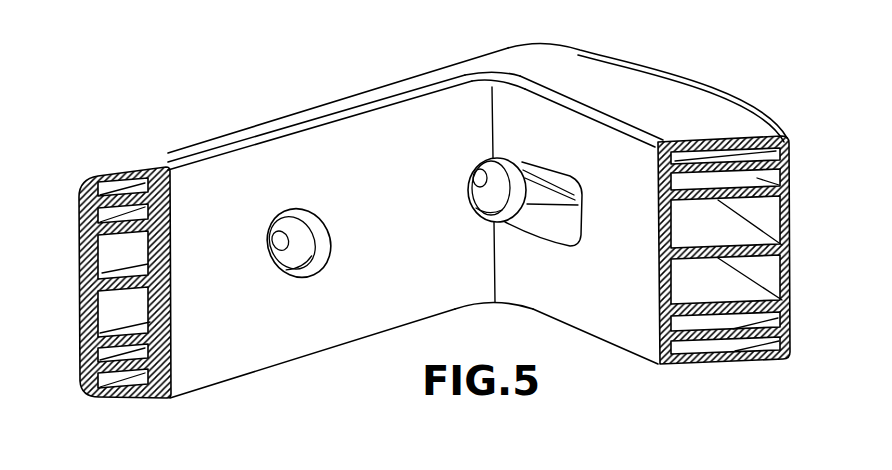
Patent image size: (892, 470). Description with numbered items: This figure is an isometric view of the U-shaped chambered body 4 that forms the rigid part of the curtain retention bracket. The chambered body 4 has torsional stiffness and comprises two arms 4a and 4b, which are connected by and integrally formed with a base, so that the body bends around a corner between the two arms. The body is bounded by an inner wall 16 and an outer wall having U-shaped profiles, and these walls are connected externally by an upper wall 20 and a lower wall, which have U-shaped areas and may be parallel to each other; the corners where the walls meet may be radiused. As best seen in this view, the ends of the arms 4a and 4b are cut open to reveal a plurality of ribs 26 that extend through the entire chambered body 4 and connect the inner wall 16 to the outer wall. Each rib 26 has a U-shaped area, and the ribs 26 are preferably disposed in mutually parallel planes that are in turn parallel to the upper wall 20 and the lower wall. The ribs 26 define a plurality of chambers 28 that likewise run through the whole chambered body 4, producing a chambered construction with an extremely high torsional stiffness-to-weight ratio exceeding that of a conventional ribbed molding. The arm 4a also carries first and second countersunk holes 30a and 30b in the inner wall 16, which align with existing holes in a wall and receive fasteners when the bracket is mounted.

The U-shaped chambered body 4 is at (434, 225).
The arm 4a is at (225, 136).
The arm 4b is at (737, 100).
The inner wall 16 is at (350, 138).
The upper wall 20 is at (625, 72).
The ribs 26 is at (112, 186).
The chambers 28 is at (118, 302).
The first countersunk hole 30a is at (330, 222).
The second countersunk hole 30b is at (468, 197).